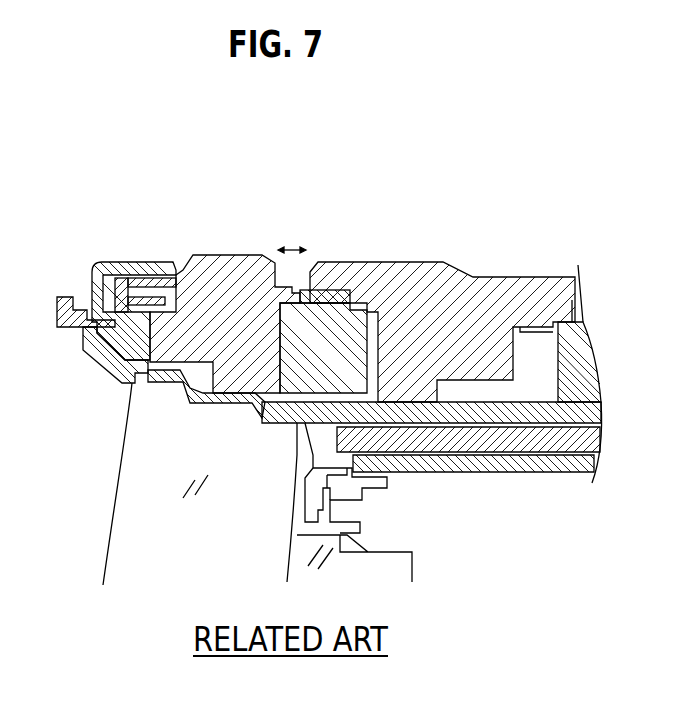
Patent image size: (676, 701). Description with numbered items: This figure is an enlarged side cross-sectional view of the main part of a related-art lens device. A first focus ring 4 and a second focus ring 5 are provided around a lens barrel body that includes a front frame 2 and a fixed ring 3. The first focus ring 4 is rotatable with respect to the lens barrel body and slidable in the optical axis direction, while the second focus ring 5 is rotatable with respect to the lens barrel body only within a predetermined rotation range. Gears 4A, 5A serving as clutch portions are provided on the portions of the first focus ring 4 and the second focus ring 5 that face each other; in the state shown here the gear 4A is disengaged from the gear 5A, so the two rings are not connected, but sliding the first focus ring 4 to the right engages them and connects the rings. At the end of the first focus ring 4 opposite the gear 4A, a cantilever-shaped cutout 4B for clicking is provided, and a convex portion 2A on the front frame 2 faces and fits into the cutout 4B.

The front frame 2 is at (178, 300).
The convex portion 2A is at (150, 317).
The cantilever-shaped cutout 4B is at (93, 300).
The first focus ring 4 is at (248, 290).
The gear 4A is at (310, 285).
The fixed ring 3 is at (322, 335).
The gear 5A is at (340, 292).
The second focus ring 5 is at (406, 295).